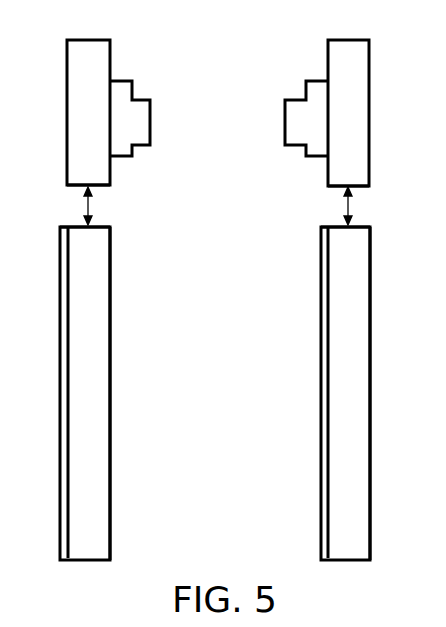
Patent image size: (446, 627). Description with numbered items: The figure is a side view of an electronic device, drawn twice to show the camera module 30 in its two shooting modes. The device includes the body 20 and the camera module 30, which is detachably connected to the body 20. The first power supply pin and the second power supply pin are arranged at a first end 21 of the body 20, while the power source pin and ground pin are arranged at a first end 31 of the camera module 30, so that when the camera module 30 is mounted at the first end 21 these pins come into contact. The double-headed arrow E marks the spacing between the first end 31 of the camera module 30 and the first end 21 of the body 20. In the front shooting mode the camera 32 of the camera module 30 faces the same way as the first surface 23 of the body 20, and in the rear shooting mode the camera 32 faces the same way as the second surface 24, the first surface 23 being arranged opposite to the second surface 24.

The body 20 is at (103, 368).
The first end 21 is at (100, 228).
The first surface 23 is at (63, 360).
The second surface 24 is at (110, 325).
The camera module 30 is at (85, 52).
The first end 31 is at (98, 173).
The camera 32 is at (138, 117).
The gap distance E is at (74, 206).